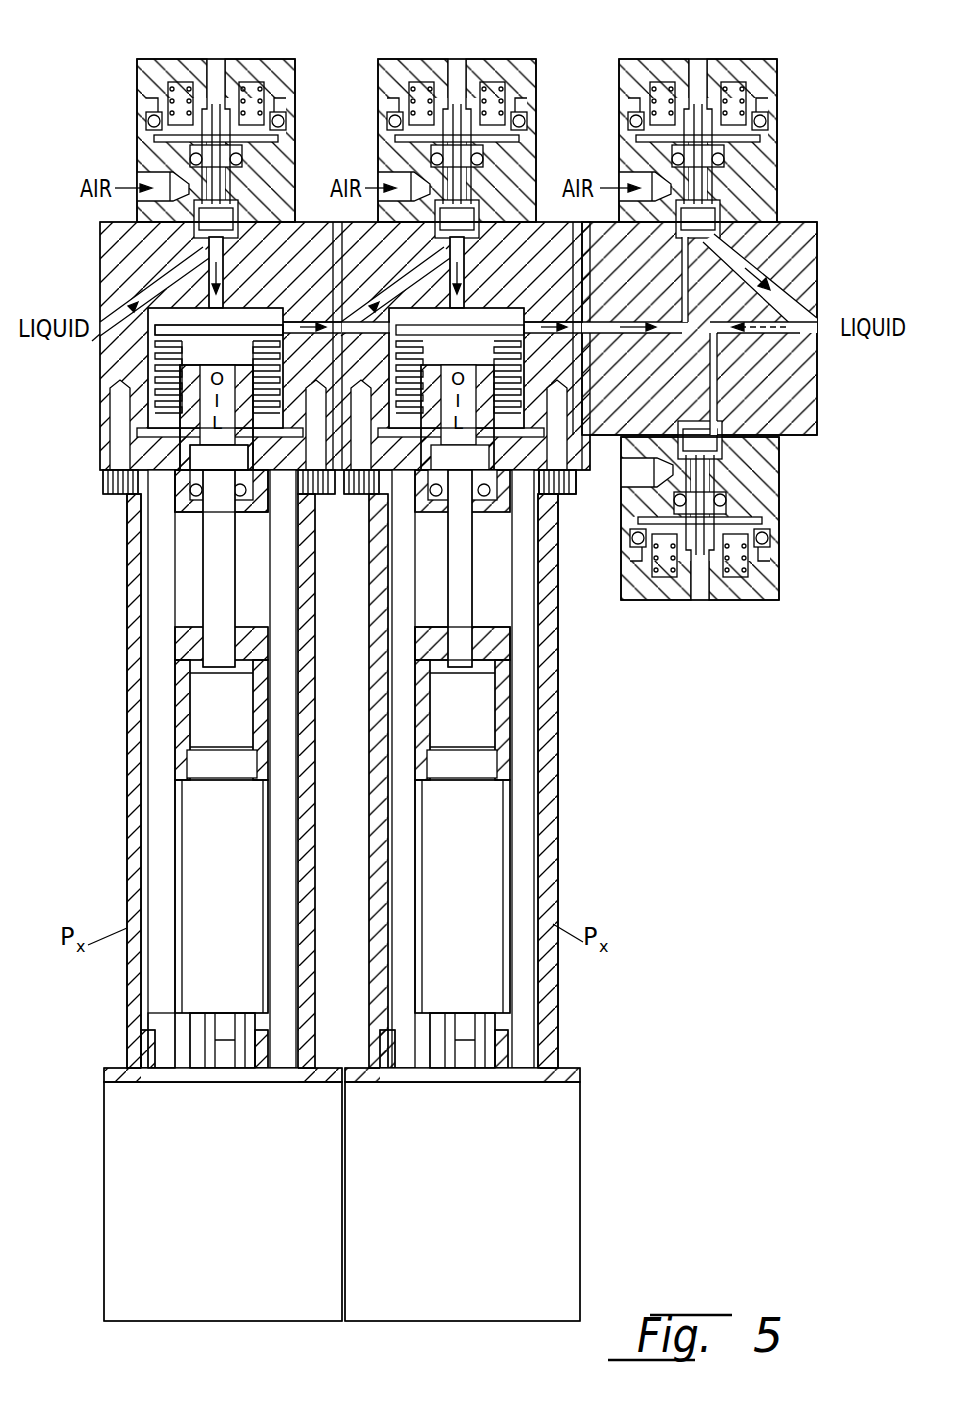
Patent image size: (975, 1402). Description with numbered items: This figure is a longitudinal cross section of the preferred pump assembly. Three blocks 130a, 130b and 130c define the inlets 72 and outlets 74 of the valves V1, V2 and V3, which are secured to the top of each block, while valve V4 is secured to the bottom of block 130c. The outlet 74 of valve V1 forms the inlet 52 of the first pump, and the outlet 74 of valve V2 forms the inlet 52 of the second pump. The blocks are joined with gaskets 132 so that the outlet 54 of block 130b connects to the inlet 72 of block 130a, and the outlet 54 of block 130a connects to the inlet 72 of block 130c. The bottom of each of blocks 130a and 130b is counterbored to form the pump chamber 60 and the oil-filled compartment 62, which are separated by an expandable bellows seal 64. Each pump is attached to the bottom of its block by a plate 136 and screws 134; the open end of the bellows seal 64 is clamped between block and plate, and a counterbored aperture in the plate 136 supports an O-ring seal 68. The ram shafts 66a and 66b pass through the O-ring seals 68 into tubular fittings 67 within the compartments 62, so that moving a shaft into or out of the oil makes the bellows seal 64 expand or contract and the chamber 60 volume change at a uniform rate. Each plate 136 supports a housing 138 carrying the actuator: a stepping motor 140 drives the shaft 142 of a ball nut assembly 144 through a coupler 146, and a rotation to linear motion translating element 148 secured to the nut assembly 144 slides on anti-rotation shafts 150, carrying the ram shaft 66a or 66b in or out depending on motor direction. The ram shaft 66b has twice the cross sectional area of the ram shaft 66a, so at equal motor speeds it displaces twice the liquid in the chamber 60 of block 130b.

The inlet 52 is at (336, 272).
The outlet 54 is at (323, 322).
The pump chamber 60 is at (153, 320).
The compartment 62 is at (195, 360).
The bellows seal 64 is at (186, 357).
The ram shaft 66a is at (455, 549).
The ram shaft 66b is at (213, 549).
The tubular fitting 67 is at (190, 393).
The O-ring seal 68 is at (195, 500).
The inlet 72 is at (152, 284).
The outlet 74 is at (229, 270).
The block 130a is at (523, 300).
The block 130b is at (292, 300).
The block 130c is at (637, 283).
The gasket 132 is at (591, 167).
The screw 134 is at (103, 485).
The plate 136 is at (579, 462).
The housing 138 is at (124, 782).
The stepping motor 140 is at (265, 1243).
The shaft 142 is at (222, 1023).
The ball nut assembly 144 is at (244, 894).
The coupler 146 is at (258, 1074).
The rotation to linear motion translating element 148 is at (495, 651).
The anti-rotation shaft 150 is at (528, 830).
The valve V1 is at (163, 58).
The valve V2 is at (409, 58).
The valve V3 is at (648, 58).
The valve V4 is at (668, 602).